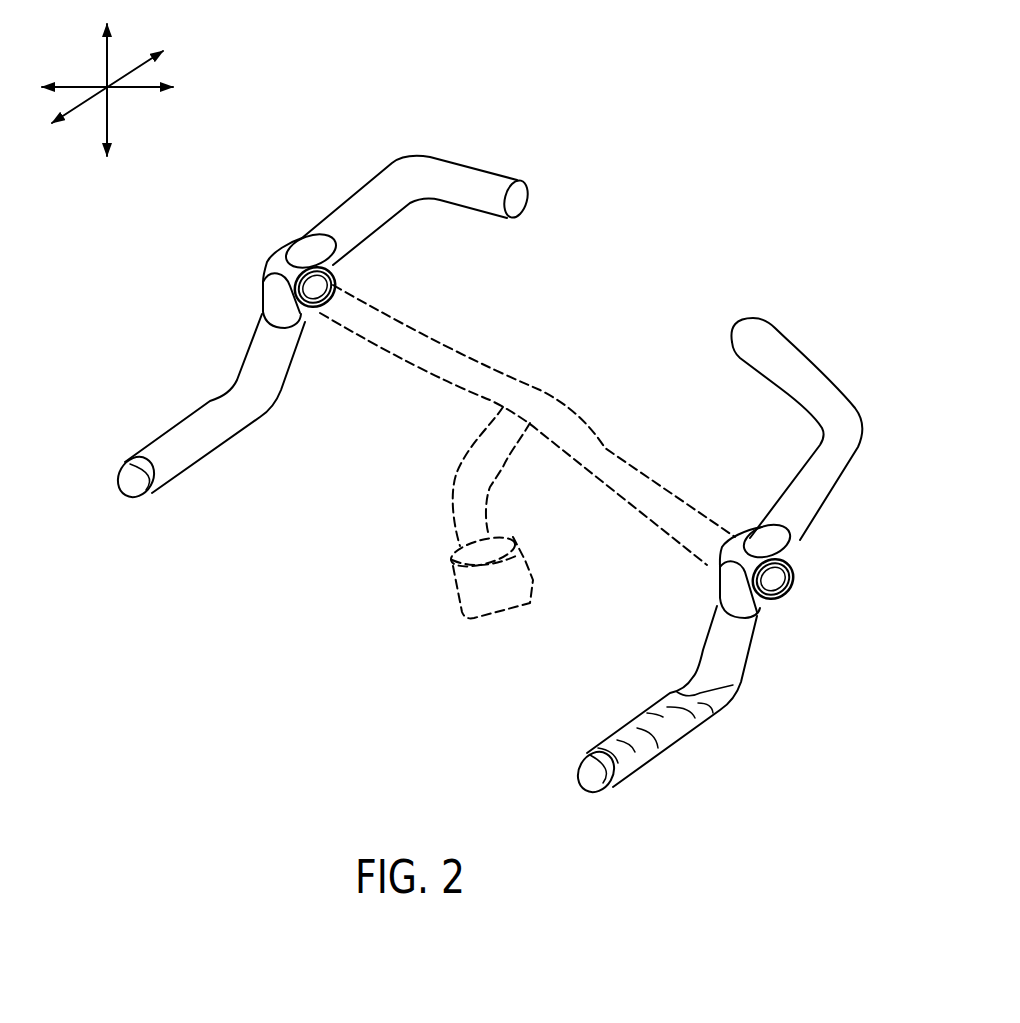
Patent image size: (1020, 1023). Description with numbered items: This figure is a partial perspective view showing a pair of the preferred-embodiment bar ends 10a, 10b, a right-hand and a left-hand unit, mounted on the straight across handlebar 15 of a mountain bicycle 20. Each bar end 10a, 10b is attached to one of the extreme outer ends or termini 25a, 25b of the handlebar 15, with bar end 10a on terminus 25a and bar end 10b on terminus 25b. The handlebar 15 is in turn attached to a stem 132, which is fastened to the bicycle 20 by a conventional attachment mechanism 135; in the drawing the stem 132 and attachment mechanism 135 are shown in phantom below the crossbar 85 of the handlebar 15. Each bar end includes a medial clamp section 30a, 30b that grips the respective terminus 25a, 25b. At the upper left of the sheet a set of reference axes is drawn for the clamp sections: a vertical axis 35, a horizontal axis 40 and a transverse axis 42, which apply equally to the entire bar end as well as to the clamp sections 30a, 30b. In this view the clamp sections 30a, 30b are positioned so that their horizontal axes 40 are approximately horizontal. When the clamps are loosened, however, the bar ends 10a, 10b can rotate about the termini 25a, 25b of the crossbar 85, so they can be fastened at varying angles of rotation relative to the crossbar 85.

The bar end 10a is at (845, 542).
The bar end 10b is at (393, 106).
The handlebar 15 is at (496, 330).
The mountain bicycle 20 is at (390, 636).
The terminus 25a is at (715, 560).
The terminus 25b is at (310, 293).
The clamp section 30a is at (772, 582).
The clamp section 30b is at (284, 258).
The vertical axis 35 is at (110, 48).
The horizontal axis 40 is at (75, 108).
The transverse axis 42 is at (148, 85).
The crossbar 85 is at (605, 449).
The stem 132 is at (504, 468).
The attachment mechanism 135 is at (533, 573).